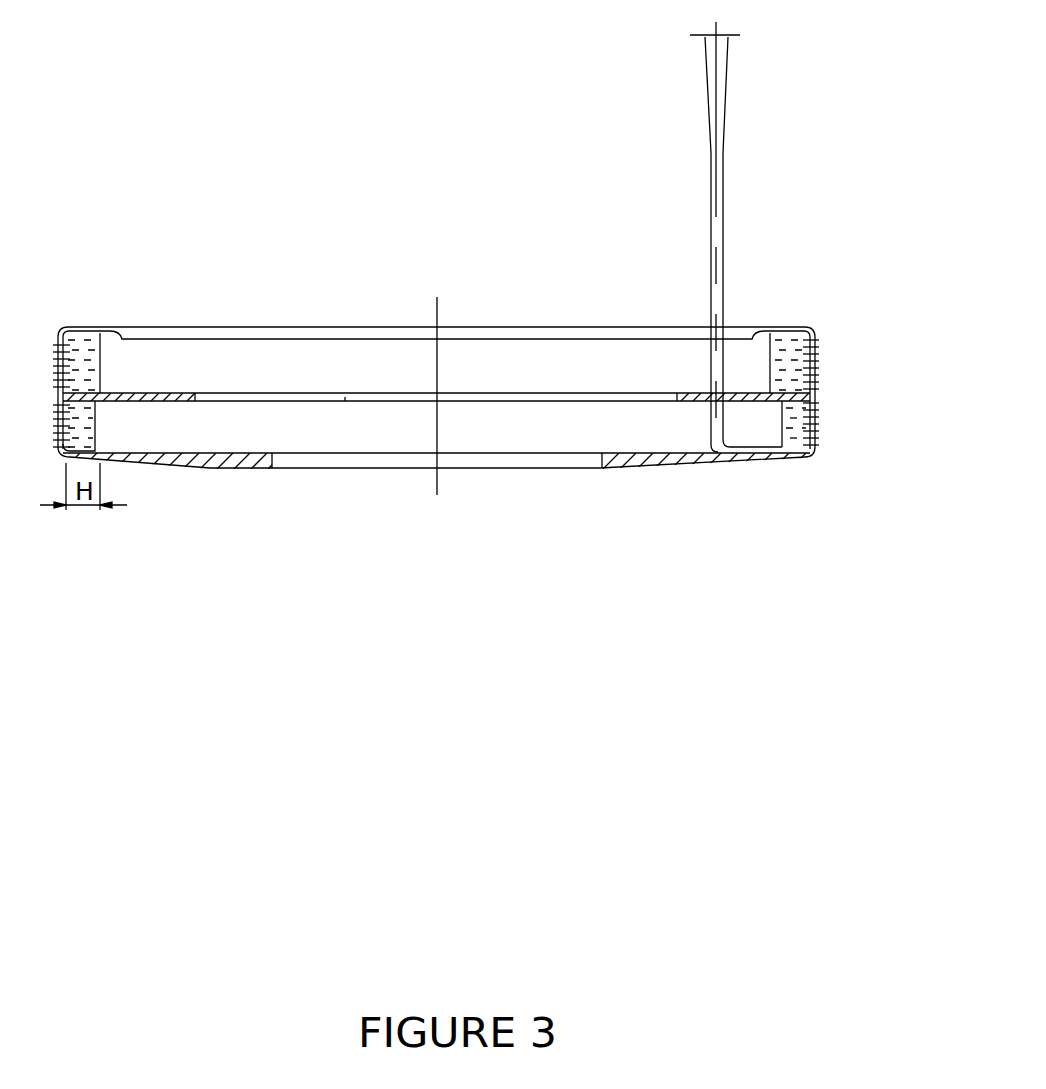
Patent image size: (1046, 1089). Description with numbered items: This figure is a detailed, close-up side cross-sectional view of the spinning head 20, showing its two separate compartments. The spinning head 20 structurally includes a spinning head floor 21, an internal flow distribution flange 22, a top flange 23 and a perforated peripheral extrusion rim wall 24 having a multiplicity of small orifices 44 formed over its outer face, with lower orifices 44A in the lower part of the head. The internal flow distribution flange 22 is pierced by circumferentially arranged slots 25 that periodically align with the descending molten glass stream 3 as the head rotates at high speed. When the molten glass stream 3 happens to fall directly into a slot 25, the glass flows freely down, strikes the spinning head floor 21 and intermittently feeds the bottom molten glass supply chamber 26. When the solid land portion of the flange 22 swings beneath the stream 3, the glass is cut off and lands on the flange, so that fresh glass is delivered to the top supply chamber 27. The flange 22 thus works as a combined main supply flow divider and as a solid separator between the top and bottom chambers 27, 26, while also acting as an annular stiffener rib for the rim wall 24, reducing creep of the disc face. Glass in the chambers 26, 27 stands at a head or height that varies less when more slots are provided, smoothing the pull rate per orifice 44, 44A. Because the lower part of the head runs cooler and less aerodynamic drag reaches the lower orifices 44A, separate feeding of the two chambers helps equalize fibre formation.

The molten glass stream 3 is at (684, 237).
The spinning head 20 is at (674, 534).
The spinning head floor 21 is at (428, 534).
The internal flow distribution flange 22 is at (431, 504).
The top flange 23 is at (84, 299).
The peripheral extrusion rim wall 24 is at (465, 368).
The slots or openings 25 is at (699, 303).
The bottom molten glass supply chamber 26 is at (746, 508).
The top supply chamber 27 is at (821, 265).
The small orifices 44 is at (844, 339).
The lower orifices 44A is at (856, 395).